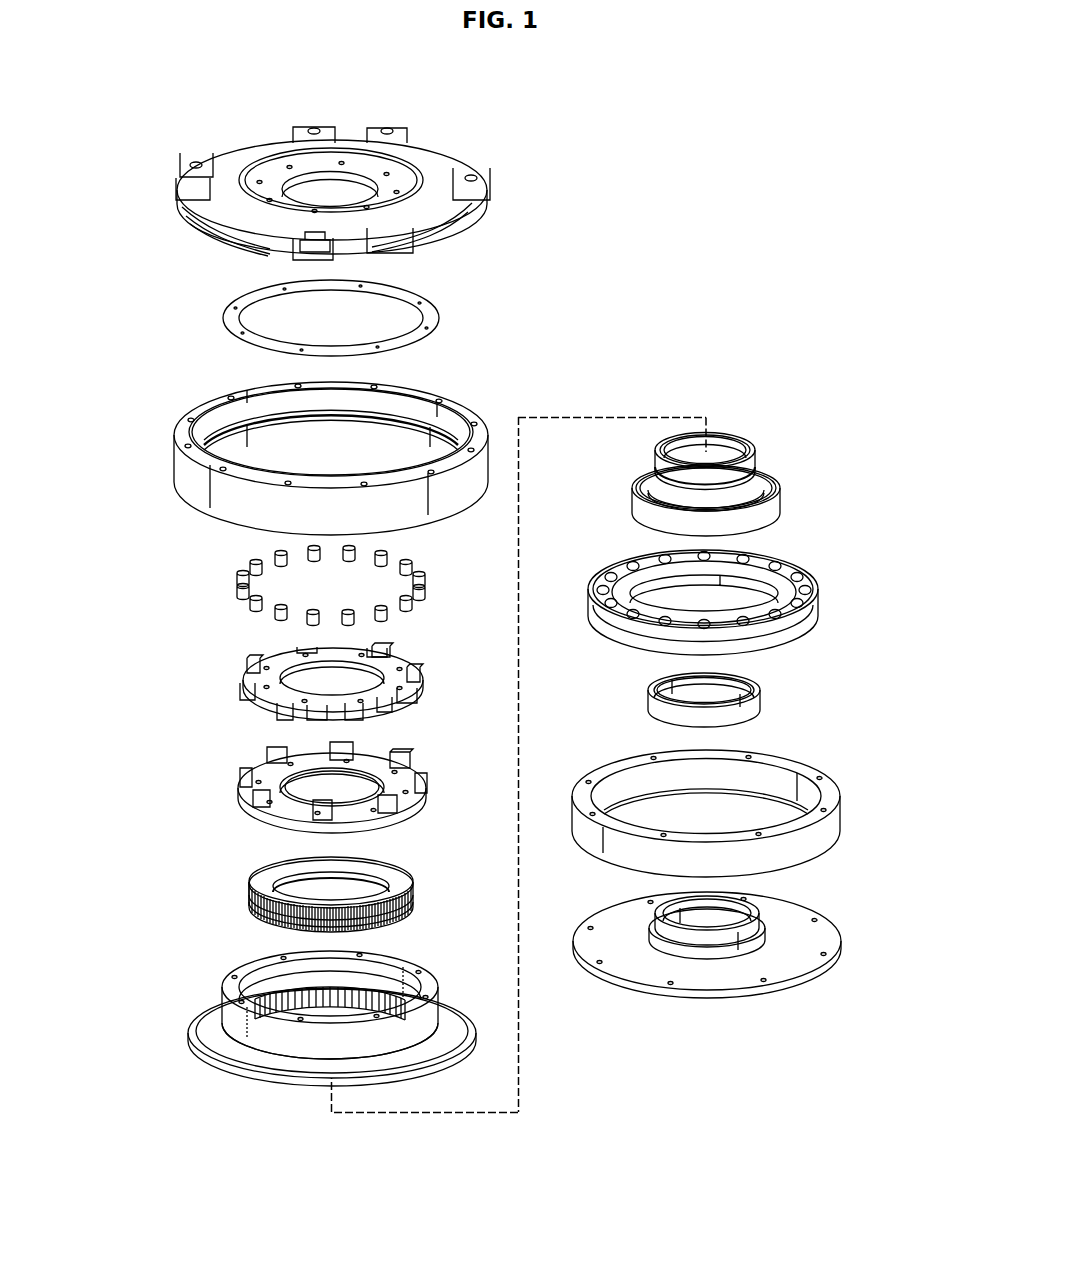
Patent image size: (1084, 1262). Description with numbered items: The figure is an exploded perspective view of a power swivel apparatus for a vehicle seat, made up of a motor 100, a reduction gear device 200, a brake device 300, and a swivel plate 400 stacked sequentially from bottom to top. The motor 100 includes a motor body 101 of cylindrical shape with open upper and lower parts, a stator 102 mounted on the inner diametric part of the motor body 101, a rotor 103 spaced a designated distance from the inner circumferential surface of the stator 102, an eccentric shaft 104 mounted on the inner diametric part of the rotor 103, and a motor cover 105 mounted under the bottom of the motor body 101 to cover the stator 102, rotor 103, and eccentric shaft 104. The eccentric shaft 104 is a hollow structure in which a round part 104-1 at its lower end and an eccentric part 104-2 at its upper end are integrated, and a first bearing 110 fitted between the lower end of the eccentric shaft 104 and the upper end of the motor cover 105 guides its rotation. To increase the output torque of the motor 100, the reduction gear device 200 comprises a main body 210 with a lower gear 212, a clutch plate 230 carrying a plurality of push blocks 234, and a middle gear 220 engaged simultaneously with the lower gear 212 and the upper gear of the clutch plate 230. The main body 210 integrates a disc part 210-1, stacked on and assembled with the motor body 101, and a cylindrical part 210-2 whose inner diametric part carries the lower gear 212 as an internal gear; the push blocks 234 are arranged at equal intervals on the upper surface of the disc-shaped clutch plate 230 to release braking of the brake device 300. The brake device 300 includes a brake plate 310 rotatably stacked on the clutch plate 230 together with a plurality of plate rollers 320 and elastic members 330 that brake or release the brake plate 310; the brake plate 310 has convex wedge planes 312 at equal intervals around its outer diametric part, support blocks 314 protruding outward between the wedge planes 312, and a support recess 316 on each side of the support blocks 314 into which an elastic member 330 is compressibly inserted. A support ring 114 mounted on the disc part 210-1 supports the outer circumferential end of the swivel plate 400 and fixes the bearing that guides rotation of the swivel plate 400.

The motor 100 is at (876, 934).
The motor body 101 is at (622, 845).
The stator 102 is at (679, 569).
The rotor 103 is at (657, 587).
The eccentric shaft 104 is at (906, 424).
The round part 104-1 is at (765, 507).
The eccentric part 104-2 is at (758, 466).
The motor cover 105 is at (648, 968).
The first bearing 110 is at (762, 703).
The support ring 114 is at (188, 472).
The reduction gear device 200 is at (150, 793).
The main body 210 is at (97, 1050).
The disc part 210-1 is at (256, 1053).
The cylindrical part 210-2 is at (274, 994).
The lower gear 212 is at (384, 986).
The middle gear 220 is at (431, 888).
The clutch plate 230 is at (376, 780).
The push blocks 234 is at (405, 755).
The brake device 300 is at (152, 578).
The brake plate 310 is at (332, 676).
The wedge planes 312 is at (398, 656).
The support blocks 314 is at (424, 668).
The support recess 316 is at (250, 682).
The plate rollers 320 is at (270, 613).
The elastic members 330 is at (278, 626).
The swivel plate 400 is at (188, 242).